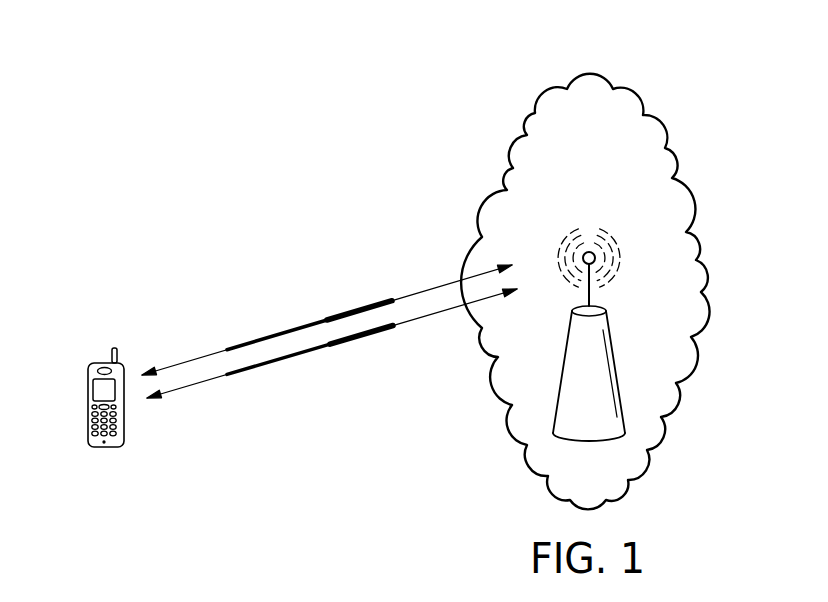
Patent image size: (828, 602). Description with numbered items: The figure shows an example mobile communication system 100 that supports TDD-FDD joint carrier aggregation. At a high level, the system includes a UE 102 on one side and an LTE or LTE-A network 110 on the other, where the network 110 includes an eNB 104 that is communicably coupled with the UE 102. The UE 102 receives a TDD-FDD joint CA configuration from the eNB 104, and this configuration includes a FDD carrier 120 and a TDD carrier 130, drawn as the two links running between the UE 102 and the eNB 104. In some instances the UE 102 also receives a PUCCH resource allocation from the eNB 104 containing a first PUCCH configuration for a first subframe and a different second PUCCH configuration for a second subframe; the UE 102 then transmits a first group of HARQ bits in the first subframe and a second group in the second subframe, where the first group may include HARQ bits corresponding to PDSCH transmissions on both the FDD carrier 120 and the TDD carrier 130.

The mobile communication system 100 is at (147, 87).
The UE 102 is at (87, 407).
The eNB 104 is at (643, 338).
The LTE or LTE-A network 110 is at (588, 75).
The FDD carrier 120 is at (227, 350).
The TDD carrier 130 is at (227, 376).